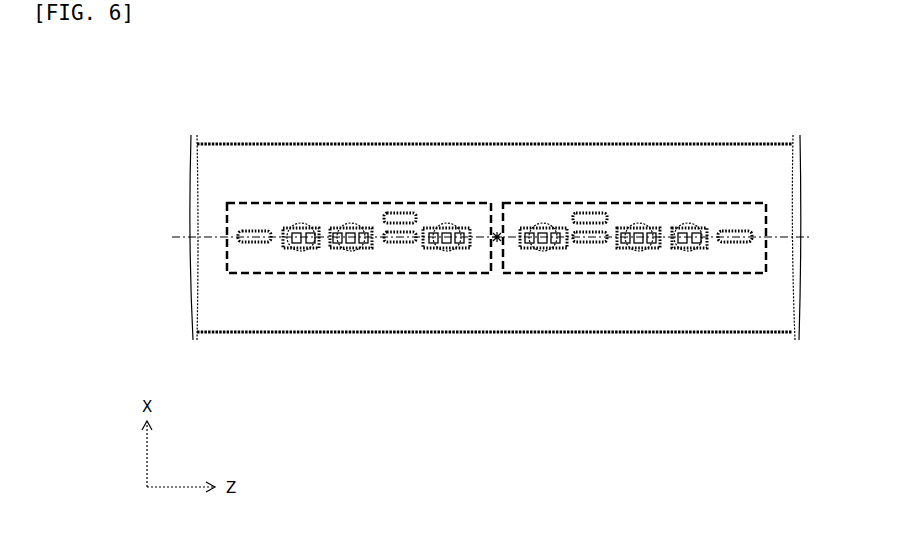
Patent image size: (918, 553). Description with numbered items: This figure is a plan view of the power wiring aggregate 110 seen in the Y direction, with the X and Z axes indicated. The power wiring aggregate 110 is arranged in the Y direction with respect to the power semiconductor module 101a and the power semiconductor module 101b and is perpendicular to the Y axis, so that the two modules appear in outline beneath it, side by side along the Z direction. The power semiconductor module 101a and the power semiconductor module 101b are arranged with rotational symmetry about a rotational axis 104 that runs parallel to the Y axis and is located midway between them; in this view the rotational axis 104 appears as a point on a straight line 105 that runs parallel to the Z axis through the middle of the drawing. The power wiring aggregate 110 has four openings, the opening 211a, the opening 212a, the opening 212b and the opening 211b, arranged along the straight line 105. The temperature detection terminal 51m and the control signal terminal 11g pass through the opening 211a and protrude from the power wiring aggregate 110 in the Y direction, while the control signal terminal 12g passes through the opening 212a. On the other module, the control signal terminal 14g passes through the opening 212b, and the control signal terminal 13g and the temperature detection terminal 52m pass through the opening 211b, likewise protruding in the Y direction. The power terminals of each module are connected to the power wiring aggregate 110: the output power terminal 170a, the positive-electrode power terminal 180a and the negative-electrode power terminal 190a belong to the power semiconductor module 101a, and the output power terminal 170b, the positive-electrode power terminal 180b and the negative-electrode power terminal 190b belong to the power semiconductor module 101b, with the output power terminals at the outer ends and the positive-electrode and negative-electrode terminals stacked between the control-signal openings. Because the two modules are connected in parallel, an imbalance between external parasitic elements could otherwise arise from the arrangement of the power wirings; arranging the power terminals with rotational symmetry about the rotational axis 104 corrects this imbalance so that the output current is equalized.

The power wiring aggregate 110 is at (212, 143).
The straight line 105 is at (476, 237).
The rotational axis 104 is at (497, 242).
The power semiconductor module 101a is at (260, 202).
The power semiconductor module 101b is at (737, 202).
The opening 211a is at (309, 234).
The opening 211b is at (677, 234).
The opening 212a is at (452, 234).
The opening 212b is at (534, 234).
The positive-electrode power terminal 180a is at (400, 213).
The positive-electrode power terminal 180b is at (590, 243).
The negative-electrode power terminal 190a is at (400, 243).
The negative-electrode power terminal 190b is at (590, 213).
The output power terminal 170a is at (254, 244).
The output power terminal 170b is at (735, 244).
The temperature detection terminal 51m is at (302, 251).
The temperature detection terminal 52m is at (688, 251).
The control signal terminal 11g is at (350, 251).
The control signal terminal 12g is at (447, 251).
The control signal terminal 13g is at (640, 251).
The control signal terminal 14g is at (543, 251).